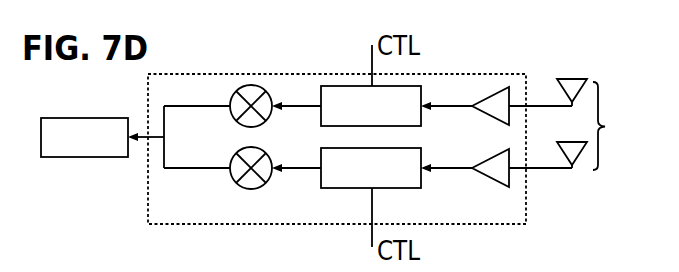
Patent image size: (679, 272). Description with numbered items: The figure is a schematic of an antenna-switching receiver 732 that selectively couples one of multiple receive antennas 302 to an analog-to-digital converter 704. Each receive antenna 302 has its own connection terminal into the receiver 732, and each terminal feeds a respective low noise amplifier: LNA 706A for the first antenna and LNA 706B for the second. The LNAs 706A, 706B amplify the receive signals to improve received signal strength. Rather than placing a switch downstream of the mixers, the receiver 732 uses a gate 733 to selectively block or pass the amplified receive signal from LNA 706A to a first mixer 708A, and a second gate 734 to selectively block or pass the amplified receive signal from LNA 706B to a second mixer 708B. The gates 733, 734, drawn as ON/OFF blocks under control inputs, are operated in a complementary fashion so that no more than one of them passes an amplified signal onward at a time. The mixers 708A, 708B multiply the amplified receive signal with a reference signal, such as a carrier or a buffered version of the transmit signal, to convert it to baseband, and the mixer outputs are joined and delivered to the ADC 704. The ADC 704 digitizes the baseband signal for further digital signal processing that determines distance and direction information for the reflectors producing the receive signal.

The analog-to-digital converter (ADC) 704 is at (92, 158).
The mixer 708A is at (231, 114).
The mixer 708B is at (231, 177).
The gate 733 is at (320, 122).
The second gate 734 is at (320, 186).
The low noise amplifier (LNA) 706A is at (484, 116).
The low noise amplifier (LNA) 706B is at (484, 180).
The receive antennas 302 is at (603, 124).
The receiver 732 is at (200, 224).